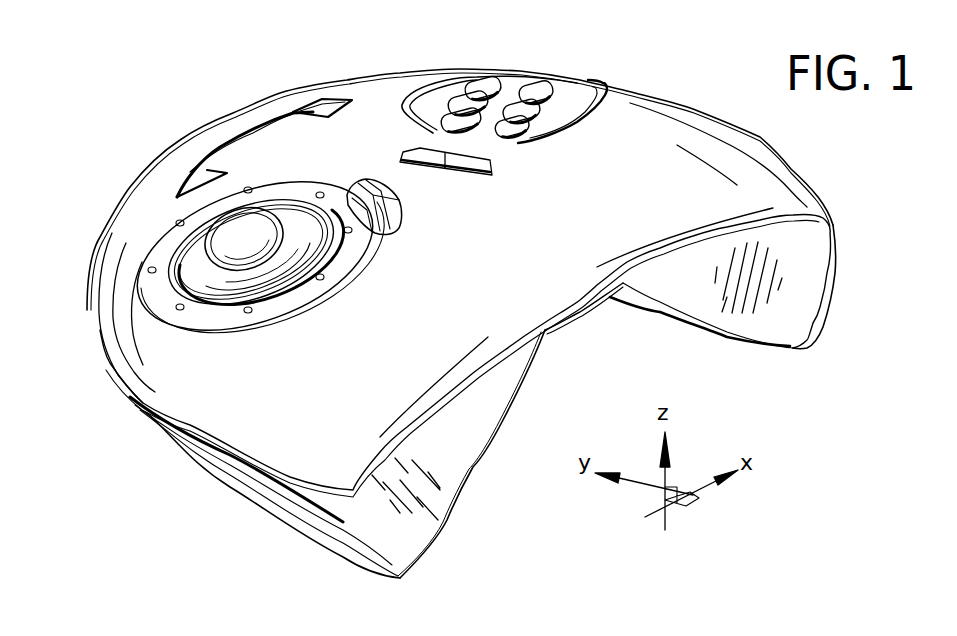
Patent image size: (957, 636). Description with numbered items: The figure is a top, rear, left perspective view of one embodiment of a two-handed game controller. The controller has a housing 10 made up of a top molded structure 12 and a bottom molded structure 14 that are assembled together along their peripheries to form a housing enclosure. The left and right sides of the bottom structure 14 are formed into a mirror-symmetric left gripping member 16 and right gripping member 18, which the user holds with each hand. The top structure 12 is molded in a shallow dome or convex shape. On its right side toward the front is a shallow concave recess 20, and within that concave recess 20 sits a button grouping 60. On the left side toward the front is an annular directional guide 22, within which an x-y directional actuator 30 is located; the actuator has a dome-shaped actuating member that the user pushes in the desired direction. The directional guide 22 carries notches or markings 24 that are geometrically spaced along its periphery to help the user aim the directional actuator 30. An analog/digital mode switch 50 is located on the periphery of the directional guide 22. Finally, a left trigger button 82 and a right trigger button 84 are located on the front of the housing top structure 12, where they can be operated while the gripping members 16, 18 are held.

The housing 10 is at (97, 343).
The top molded structure 12 is at (223, 413).
The bottom molded structure 14 is at (246, 493).
The left gripping member 16 is at (342, 547).
The right gripping member 18 is at (632, 300).
The concave recess 20 is at (562, 103).
The annular directional guide 22 is at (163, 242).
The notches or markings 24 is at (150, 271).
The x-y directional actuator 30 is at (258, 238).
The analog/digital mode switch 50 is at (370, 207).
The button grouping 60 is at (511, 100).
The left trigger button 82 is at (207, 168).
The right trigger button 84 is at (326, 102).